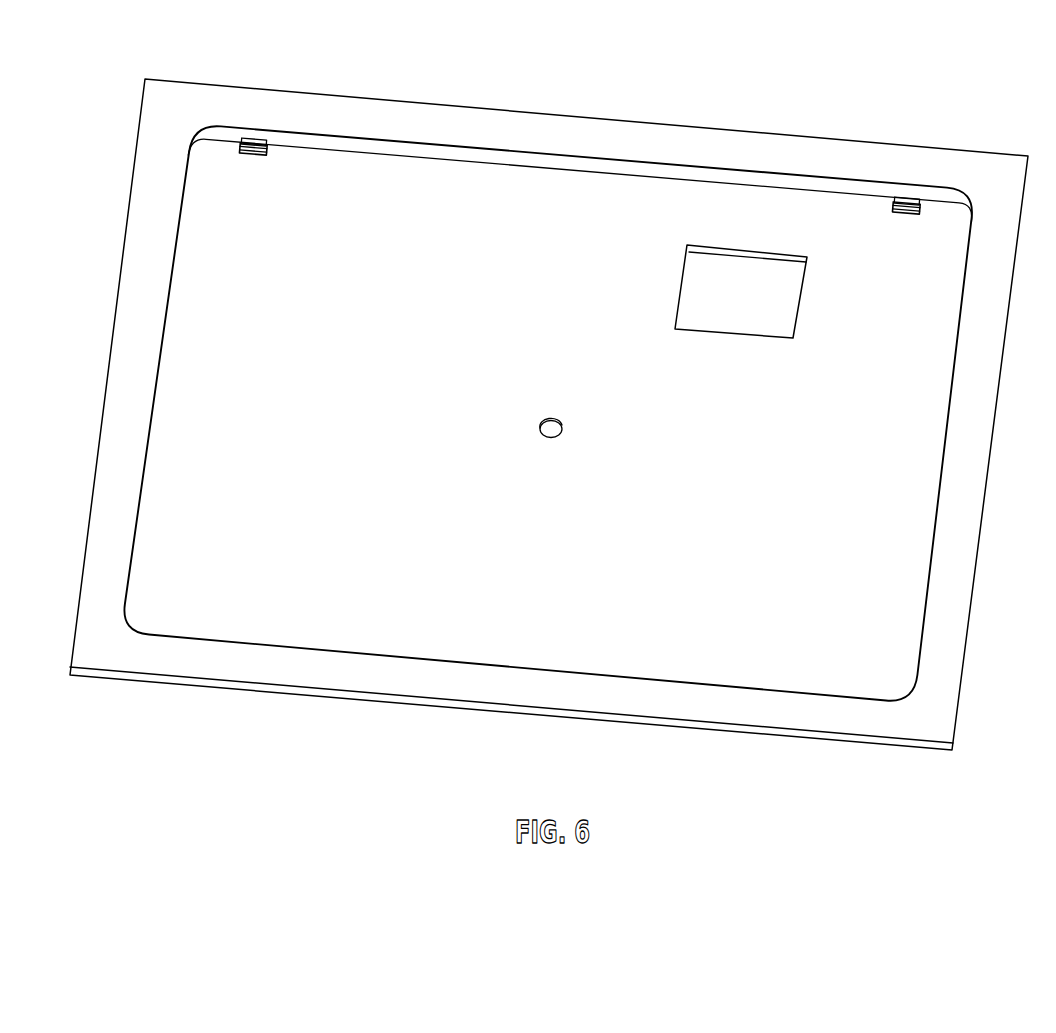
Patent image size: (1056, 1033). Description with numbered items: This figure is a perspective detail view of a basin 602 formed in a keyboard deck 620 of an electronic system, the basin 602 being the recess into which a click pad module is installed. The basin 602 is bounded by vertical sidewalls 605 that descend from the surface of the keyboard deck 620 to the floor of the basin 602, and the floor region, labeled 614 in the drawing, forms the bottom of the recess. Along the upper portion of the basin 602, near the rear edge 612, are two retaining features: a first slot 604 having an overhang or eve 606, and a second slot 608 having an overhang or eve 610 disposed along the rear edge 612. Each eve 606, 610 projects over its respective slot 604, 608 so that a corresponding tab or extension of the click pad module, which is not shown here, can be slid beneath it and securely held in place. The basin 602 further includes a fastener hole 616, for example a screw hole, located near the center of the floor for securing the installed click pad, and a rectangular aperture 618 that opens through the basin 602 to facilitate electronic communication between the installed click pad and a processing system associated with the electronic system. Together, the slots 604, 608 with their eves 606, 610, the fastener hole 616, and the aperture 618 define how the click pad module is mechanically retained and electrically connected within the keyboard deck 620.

The basin 602 is at (205, 62).
The first slot 604 is at (250, 157).
The vertical sidewalls 605 is at (452, 157).
The eve 606 is at (252, 144).
The second slot 608 is at (903, 215).
The eve 610 is at (905, 200).
The rear edge 612 is at (553, 162).
The main surface 614 is at (448, 494).
The fastener hole 616 is at (562, 427).
The aperture 618 is at (719, 305).
The keyboard deck 620 is at (443, 685).